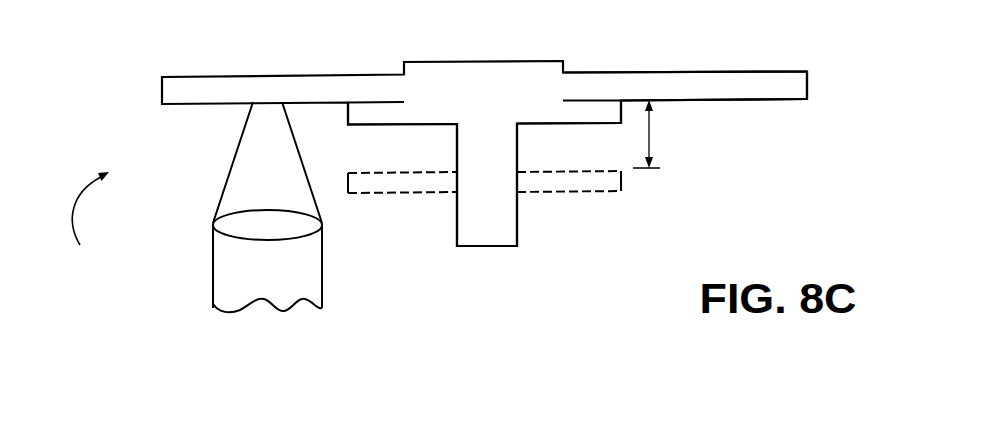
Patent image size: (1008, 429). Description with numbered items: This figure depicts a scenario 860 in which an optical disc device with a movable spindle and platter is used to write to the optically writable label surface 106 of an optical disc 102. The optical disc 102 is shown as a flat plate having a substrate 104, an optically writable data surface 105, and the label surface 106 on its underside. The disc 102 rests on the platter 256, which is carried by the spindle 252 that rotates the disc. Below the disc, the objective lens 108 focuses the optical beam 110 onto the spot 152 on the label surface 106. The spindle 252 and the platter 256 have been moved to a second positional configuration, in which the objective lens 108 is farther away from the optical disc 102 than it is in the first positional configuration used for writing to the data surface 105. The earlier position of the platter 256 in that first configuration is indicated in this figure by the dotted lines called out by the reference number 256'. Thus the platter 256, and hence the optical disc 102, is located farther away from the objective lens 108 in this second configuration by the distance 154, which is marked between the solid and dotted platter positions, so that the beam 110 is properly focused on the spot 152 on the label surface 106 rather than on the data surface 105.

The optical disc 102 is at (807, 79).
The substrate 104 is at (732, 80).
The optically writable data surface 105 is at (795, 96).
The optically writable label surface 106 is at (753, 100).
The objective lens 108 is at (242, 220).
The optical beam 110 is at (252, 283).
The spot 152 is at (265, 103).
The distance 154 is at (652, 134).
The spindle 252 is at (468, 227).
The platter 256 is at (484, 134).
The platter position in first positional configuration 256' is at (484, 208).
The scenario 860 is at (89, 224).